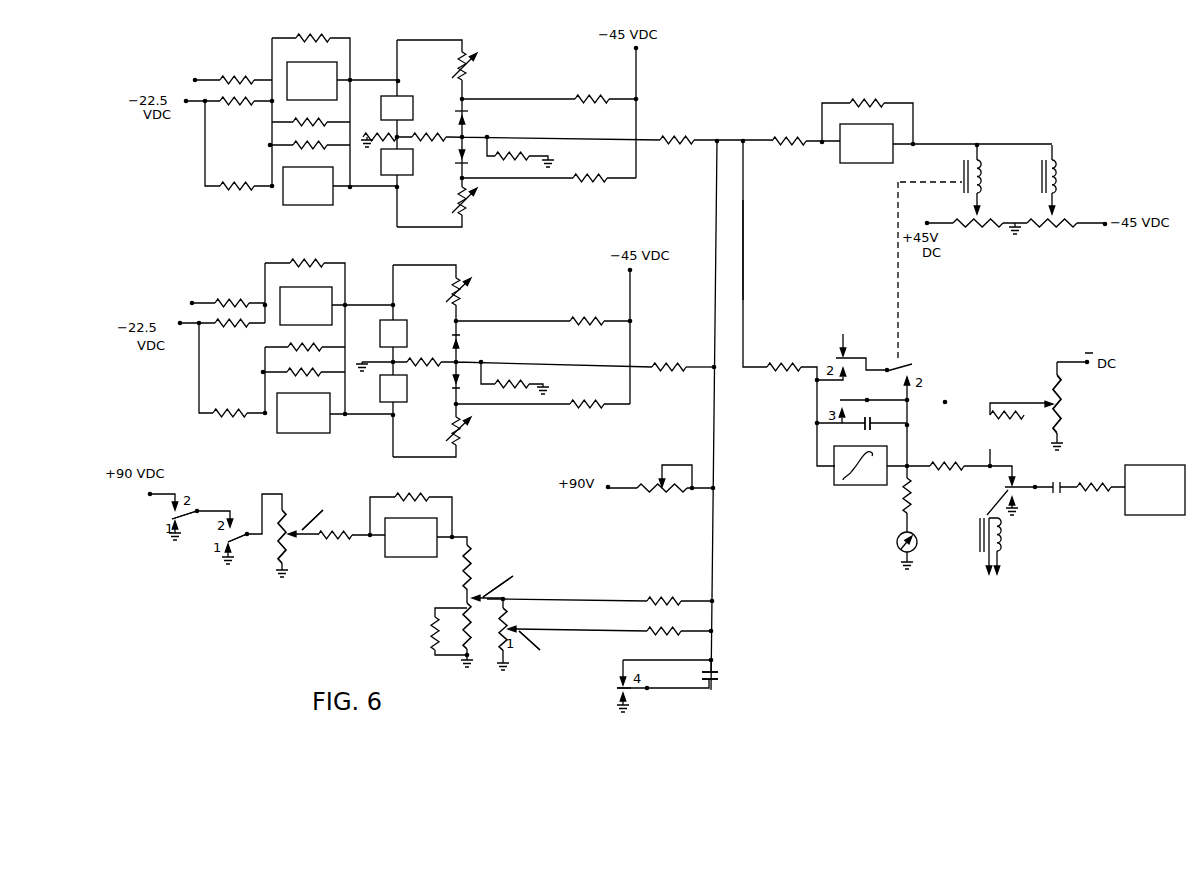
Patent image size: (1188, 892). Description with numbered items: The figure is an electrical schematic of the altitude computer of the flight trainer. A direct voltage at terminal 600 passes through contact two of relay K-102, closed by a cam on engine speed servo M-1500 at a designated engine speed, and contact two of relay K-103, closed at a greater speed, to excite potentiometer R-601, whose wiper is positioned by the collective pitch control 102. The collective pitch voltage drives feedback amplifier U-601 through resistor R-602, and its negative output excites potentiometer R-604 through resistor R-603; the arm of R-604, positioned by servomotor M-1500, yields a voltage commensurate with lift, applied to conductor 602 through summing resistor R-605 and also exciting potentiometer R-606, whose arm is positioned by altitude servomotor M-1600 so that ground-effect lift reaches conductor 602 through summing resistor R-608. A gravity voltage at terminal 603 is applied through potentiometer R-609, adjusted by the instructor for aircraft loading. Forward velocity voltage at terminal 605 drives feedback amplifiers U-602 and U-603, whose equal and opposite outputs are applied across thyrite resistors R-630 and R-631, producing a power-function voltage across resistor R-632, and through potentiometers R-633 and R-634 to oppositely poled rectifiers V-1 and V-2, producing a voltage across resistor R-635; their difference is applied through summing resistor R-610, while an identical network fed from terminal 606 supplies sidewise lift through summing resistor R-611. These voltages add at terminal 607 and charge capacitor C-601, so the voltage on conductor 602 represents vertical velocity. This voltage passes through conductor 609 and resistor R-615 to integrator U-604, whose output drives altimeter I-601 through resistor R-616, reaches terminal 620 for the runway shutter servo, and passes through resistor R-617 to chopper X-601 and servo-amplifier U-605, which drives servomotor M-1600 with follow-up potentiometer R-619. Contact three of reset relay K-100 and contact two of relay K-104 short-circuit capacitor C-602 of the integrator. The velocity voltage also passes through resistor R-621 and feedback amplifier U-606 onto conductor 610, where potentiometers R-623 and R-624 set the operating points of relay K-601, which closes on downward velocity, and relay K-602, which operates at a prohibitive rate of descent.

The terminal 600 is at (150, 494).
The conductor 602 is at (715, 215).
The terminal 603 is at (607, 490).
The terminal 605 is at (194, 82).
The terminal 606 is at (192, 303).
The terminal 607 is at (756, 128).
The conductor 609 is at (743, 268).
The conductor 610 is at (945, 145).
The terminal 620 is at (957, 414).
The collective pitch control 102 is at (331, 505).
The feedback amplifier U-601 is at (411, 525).
The feedback amplifier U-602 is at (312, 81).
The feedback amplifier U-603 is at (308, 186).
The integrator U-604 is at (838, 489).
The servo-amplifier U-605 is at (1131, 490).
The feedback amplifier U-606 is at (866, 131).
The potentiometer R-601 is at (298, 546).
The resistor R-602 is at (326, 540).
The resistor R-603 is at (470, 567).
The potentiometer R-604 is at (465, 604).
The summing resistor R-605 is at (684, 583).
The potentiometer R-606 is at (514, 614).
The summing resistor R-608 is at (684, 618).
The potentiometer R-609 is at (641, 498).
The summing resistor R-610 is at (659, 125).
The summing resistor R-611 is at (652, 350).
The resistor R-615 is at (803, 350).
The resistor R-616 is at (929, 495).
The resistor R-617 is at (932, 453).
The follow-up potentiometer R-619 is at (1063, 396).
The resistor R-621 is at (813, 124).
The potentiometer R-623 is at (953, 232).
The potentiometer R-624 is at (1030, 233).
The thyrite resistor R-630 is at (430, 96).
The thyrite resistor R-631 is at (413, 163).
The resistor R-632 is at (368, 132).
The potentiometer R-633 is at (483, 65).
The potentiometer R-634 is at (483, 200).
The resistor R-635 is at (414, 124).
The rectifier V-1 is at (474, 114).
The rectifier V-2 is at (474, 160).
The capacitor C-601 is at (717, 681).
The capacitor C-602 is at (879, 430).
The reset relay K-100 is at (830, 412).
The relay K-102 is at (170, 514).
The relay K-103 is at (237, 541).
The relay K-104 is at (843, 334).
The relay K-601 is at (978, 198).
The relay K-602 is at (1055, 198).
The altimeter I-601 is at (899, 539).
The chopper X-601 is at (1013, 525).
The engine speed servomotor M-1500 is at (540, 581).
The altitude servomotor M-1600 is at (1033, 402).